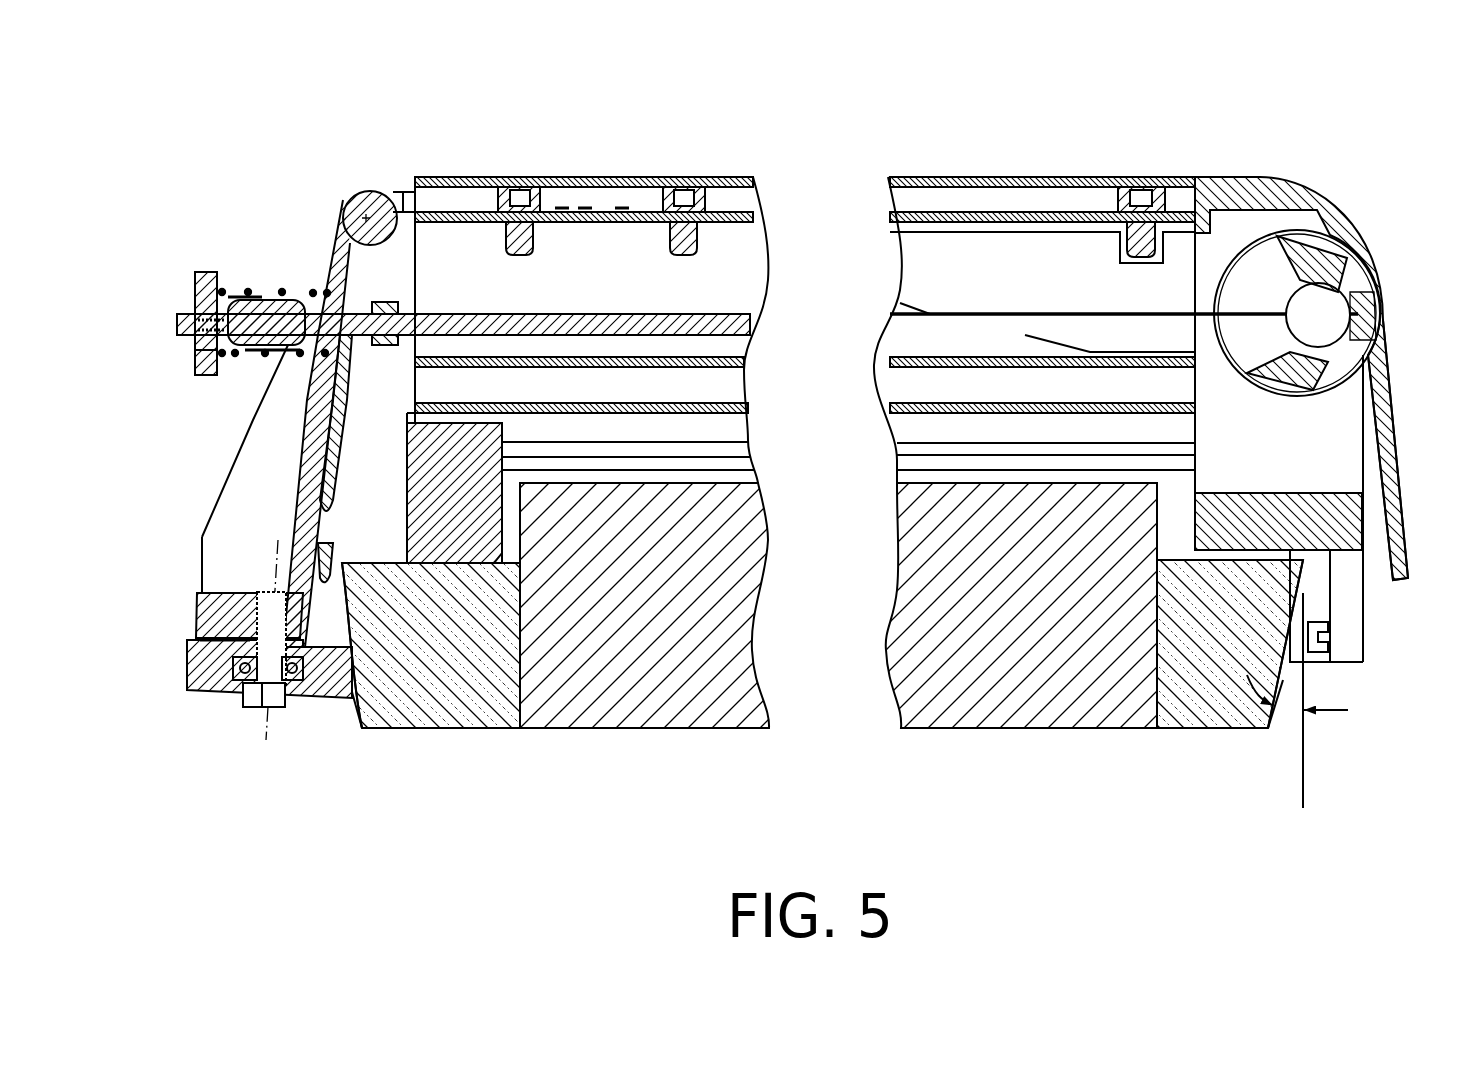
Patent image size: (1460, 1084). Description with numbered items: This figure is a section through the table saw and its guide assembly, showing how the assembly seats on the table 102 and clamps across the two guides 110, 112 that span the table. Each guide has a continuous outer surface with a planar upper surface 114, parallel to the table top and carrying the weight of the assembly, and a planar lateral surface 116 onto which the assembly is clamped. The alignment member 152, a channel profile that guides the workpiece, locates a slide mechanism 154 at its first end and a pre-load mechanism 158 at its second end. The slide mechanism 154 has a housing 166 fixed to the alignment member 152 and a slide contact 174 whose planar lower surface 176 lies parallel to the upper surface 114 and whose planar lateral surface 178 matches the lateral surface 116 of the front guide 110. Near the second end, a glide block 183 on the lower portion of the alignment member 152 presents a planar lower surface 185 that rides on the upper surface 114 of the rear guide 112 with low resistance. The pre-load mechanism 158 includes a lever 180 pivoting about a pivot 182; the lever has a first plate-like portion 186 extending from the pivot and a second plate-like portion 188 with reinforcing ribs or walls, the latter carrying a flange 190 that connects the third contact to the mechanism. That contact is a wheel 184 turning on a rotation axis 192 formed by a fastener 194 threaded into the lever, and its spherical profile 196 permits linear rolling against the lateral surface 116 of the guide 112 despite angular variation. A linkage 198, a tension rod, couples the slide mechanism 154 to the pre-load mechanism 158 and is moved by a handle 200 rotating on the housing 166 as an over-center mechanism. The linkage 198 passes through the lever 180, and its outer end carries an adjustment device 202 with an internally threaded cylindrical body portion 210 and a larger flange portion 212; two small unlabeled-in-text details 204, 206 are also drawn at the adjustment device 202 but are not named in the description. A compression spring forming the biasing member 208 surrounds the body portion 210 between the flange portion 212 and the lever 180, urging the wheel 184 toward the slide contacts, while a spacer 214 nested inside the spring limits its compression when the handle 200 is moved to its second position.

The table 102 is at (692, 730).
The guide 110 is at (1210, 730).
The guide 112 is at (440, 730).
The upper surface 114 is at (512, 553).
The lateral surface 116 is at (357, 717).
The alignment member 152 is at (1000, 177).
The slide mechanism 154 is at (1333, 138).
The pre-load mechanism 158 is at (181, 141).
The housing 166 is at (1262, 177).
The slide contact 174 is at (1318, 665).
The lower surface 176 is at (1232, 563).
The lateral surface 178 is at (1290, 625).
The lever 180 is at (228, 473).
The pivot 182 is at (364, 212).
The glide block 183 is at (502, 515).
The wheel 184 is at (213, 697).
The lower surface 185 is at (482, 565).
The first plate-like portion 186 is at (347, 462).
The second plate-like portion 188 is at (205, 520).
The flange 190 is at (200, 605).
The rotation axis 192 is at (258, 737).
The fastener 194 is at (282, 712).
The spherical profile 196 is at (352, 692).
The linkage 198 is at (608, 312).
The handle 200 is at (1395, 387).
The adjustment device 202 is at (207, 270).
The pin 204 is at (200, 332).
The pin 206 is at (205, 308).
The biasing member 208 is at (252, 290).
The body portion 210 is at (237, 290).
The flange portion 212 is at (205, 378).
The spacer 214 is at (275, 302).